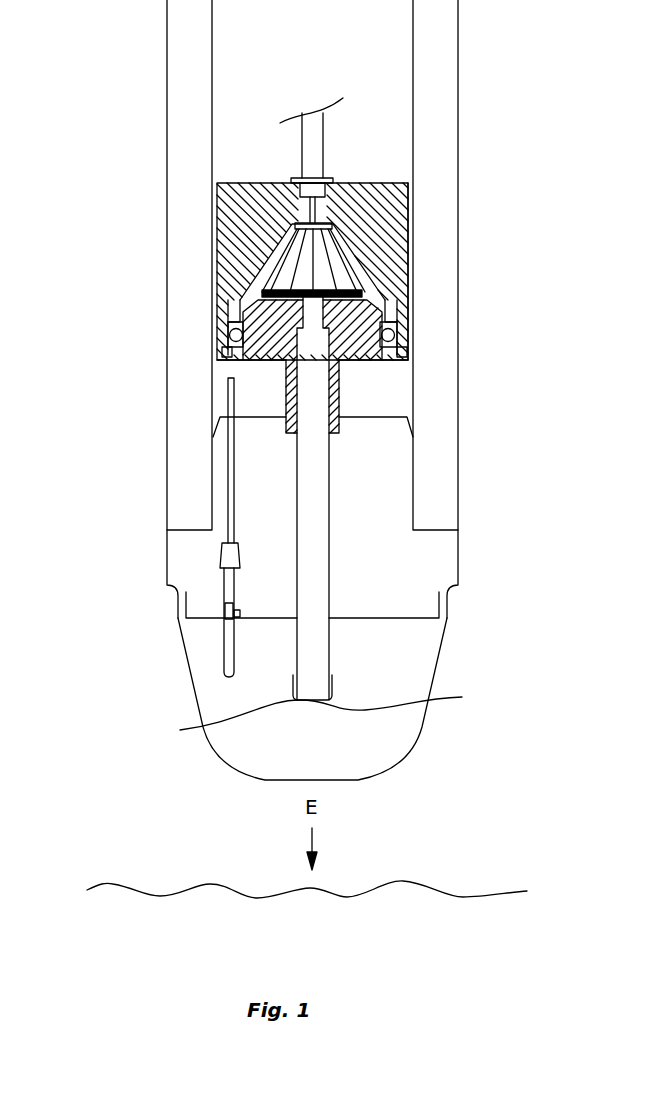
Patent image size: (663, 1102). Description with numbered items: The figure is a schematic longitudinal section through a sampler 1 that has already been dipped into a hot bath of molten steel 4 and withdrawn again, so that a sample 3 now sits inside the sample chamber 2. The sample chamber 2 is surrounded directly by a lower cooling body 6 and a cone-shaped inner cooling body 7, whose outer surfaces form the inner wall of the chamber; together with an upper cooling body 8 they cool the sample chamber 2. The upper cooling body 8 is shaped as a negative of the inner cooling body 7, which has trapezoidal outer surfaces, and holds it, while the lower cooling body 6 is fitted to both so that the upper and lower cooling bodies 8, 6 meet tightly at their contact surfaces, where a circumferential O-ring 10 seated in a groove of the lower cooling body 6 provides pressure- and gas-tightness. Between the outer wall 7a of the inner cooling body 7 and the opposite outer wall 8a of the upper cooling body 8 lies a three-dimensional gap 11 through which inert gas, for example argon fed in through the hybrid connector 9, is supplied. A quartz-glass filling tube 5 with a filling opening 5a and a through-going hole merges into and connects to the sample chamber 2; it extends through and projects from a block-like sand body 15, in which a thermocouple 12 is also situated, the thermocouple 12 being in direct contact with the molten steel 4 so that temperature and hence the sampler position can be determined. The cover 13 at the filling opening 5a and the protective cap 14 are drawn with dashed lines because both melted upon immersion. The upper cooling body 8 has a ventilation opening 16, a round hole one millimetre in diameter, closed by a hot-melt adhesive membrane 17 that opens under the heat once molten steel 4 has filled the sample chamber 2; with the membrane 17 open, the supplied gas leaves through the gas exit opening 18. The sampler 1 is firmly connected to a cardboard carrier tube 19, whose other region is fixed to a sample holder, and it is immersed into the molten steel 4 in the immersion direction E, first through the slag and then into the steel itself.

The sampler 1 is at (118, 451).
The sample chamber 2 is at (260, 294).
The sample 3 is at (255, 302).
The molten steel 4 is at (423, 905).
The filling tube 5 is at (315, 523).
The filling opening 5a is at (462, 697).
The lower cooling body 6 is at (232, 355).
The inner cooling body 7 is at (247, 290).
The outer wall of the inner cooling body 7a is at (403, 276).
The upper cooling body 8 is at (248, 220).
The outer wall of the upper cooling body 8a is at (397, 240).
The connector 9 is at (313, 150).
The O-ring 10 is at (392, 338).
The gap 11 is at (407, 305).
The thermocouple 12 is at (223, 640).
The cover 13 is at (306, 719).
The protective cap 14 is at (243, 775).
The sand body 15 is at (377, 470).
The ventilation opening 16 is at (403, 310).
The membrane 17 is at (397, 320).
The gas exit opening 18 is at (408, 183).
The carrier tube 19 is at (437, 8).